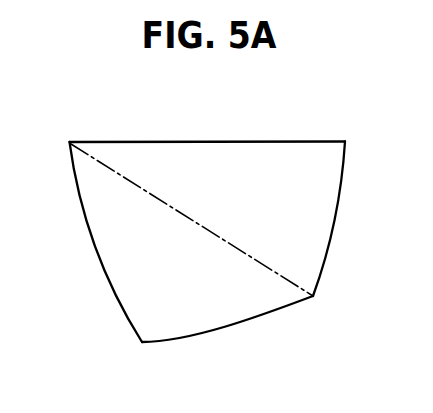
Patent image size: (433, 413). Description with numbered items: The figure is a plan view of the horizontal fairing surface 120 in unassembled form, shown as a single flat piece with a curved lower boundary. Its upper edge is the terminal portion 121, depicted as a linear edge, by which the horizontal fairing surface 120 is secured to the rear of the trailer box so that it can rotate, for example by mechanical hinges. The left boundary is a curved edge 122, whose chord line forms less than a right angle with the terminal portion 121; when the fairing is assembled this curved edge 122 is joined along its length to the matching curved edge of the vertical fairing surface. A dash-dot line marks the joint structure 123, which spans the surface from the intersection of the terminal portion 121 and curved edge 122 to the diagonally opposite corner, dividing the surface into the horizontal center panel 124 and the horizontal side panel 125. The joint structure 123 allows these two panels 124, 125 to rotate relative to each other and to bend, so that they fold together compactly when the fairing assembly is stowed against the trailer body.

The horizontal fairing surface 120 is at (217, 238).
The terminal portion 121 is at (176, 142).
The curved edge 122 is at (86, 230).
The joint structure 123 is at (281, 279).
The horizontal center panel 124 is at (313, 255).
The horizontal side panel 125 is at (160, 318).